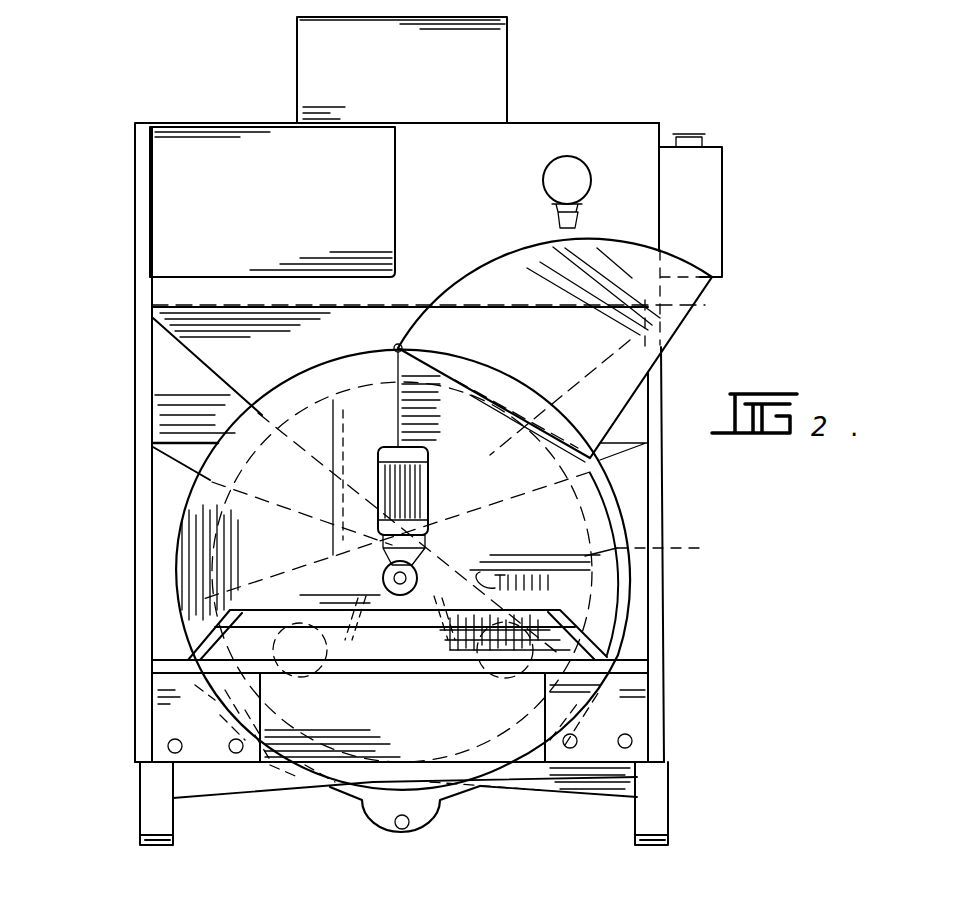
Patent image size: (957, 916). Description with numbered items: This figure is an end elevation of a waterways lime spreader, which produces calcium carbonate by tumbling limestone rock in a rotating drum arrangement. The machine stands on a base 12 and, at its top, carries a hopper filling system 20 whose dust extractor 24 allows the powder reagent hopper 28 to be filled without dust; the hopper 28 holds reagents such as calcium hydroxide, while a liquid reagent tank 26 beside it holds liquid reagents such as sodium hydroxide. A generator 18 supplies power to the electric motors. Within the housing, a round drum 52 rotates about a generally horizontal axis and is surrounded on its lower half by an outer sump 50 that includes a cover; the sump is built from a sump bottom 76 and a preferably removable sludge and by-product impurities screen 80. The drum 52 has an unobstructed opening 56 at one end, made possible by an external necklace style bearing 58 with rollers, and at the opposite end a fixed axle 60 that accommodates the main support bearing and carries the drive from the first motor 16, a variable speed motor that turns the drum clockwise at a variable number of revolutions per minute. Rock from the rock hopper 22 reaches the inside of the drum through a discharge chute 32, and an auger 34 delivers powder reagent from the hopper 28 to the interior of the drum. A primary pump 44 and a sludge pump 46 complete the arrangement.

The base 12 is at (170, 805).
The first motor 16 is at (420, 470).
The generator 18 is at (273, 201).
The hopper filling system 20 is at (400, 88).
The rock hopper 22 is at (185, 455).
The dust extractor 24 is at (548, 181).
The liquid reagent tank 26 is at (710, 215).
The powder reagent hopper 28 is at (601, 143).
The discharge chute 32 is at (397, 704).
The auger 34 is at (330, 430).
The primary pump 44 is at (195, 700).
The sludge pump 46 is at (625, 713).
The outer sump 50 is at (683, 300).
The drum 52 is at (580, 520).
The unobstructed opening 56 is at (700, 548).
The external necklace style bearing 58 is at (322, 703).
The fixed axle 60 is at (382, 578).
The sump bottom 76 is at (372, 818).
The sludge and by-product impurities screen 80 is at (408, 828).